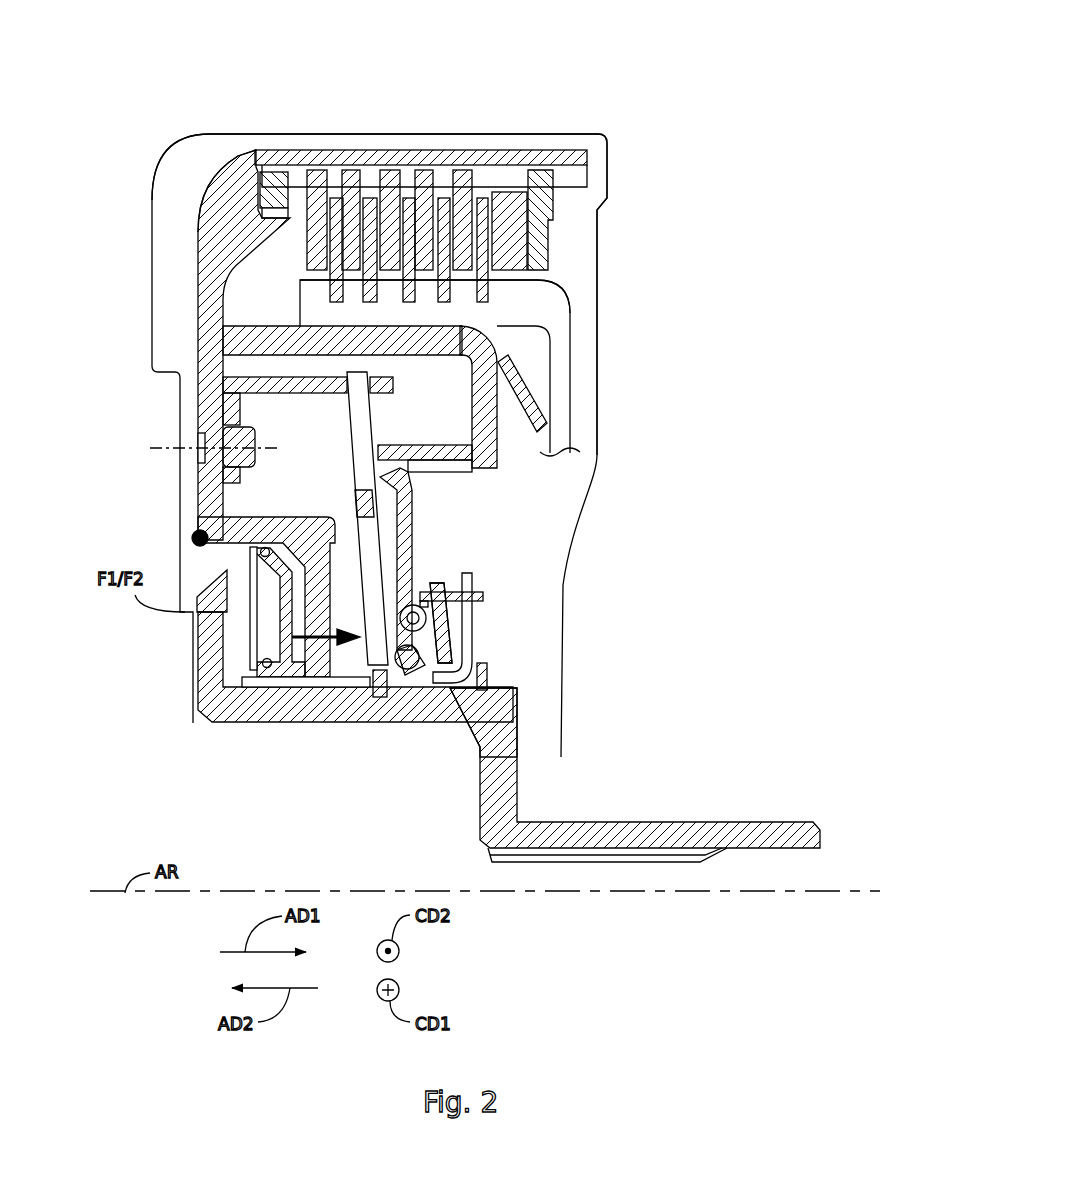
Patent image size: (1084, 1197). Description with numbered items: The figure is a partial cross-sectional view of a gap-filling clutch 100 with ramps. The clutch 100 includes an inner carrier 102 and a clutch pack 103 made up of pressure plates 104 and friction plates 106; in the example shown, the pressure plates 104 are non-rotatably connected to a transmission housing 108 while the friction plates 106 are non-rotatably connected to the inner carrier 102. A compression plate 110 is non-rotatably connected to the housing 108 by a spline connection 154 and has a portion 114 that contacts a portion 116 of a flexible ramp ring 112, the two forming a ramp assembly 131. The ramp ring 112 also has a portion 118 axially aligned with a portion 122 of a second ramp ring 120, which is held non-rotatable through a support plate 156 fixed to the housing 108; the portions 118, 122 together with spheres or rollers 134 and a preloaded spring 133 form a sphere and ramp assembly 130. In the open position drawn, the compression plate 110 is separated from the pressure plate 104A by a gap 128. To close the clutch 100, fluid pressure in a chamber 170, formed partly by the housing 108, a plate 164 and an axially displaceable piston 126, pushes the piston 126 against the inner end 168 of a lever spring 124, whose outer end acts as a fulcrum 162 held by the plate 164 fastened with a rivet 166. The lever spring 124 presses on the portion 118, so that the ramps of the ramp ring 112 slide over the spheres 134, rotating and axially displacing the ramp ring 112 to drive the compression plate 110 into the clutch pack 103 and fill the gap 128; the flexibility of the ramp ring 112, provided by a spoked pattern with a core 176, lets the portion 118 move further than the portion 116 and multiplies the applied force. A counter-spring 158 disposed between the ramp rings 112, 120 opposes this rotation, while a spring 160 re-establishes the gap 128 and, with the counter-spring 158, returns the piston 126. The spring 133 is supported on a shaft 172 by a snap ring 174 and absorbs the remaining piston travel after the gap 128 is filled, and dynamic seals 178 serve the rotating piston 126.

The gap-filling clutch 100 is at (645, 64).
The inner carrier 102 is at (565, 282).
The clutch pack 103 is at (376, 150).
The pressure plates 104 is at (462, 160).
The pressure plate 104A is at (317, 158).
The friction plates 106 is at (442, 158).
The housing 108 is at (527, 150).
The compression plate 110 is at (248, 238).
The ramp ring 112 is at (426, 530).
The portion 114 is at (503, 467).
The portion 116 is at (548, 322).
The portion 118 is at (384, 692).
The ramp ring 120 is at (437, 578).
The portion 122 is at (460, 718).
The lever spring 124 is at (212, 362).
The piston 126 is at (246, 590).
The gap 128 is at (291, 160).
The ramp assembly 130 is at (438, 480).
The ramp assembly 131 is at (397, 680).
The spring 133 is at (447, 638).
The spheres or rollers 134 is at (428, 680).
The spline connection 154 is at (258, 150).
The support plate 156 is at (481, 627).
The counter-spring 158 is at (458, 627).
The spring 160 is at (526, 388).
The fulcrum 162 is at (342, 420).
The plate 164 is at (235, 385).
The rivet 166 is at (228, 440).
The end 168 is at (352, 685).
The chamber 170 is at (237, 648).
The shaft 172 is at (668, 822).
The snap ring 174 is at (488, 674).
The core 176 is at (352, 502).
The dynamic seals 178 is at (262, 548).